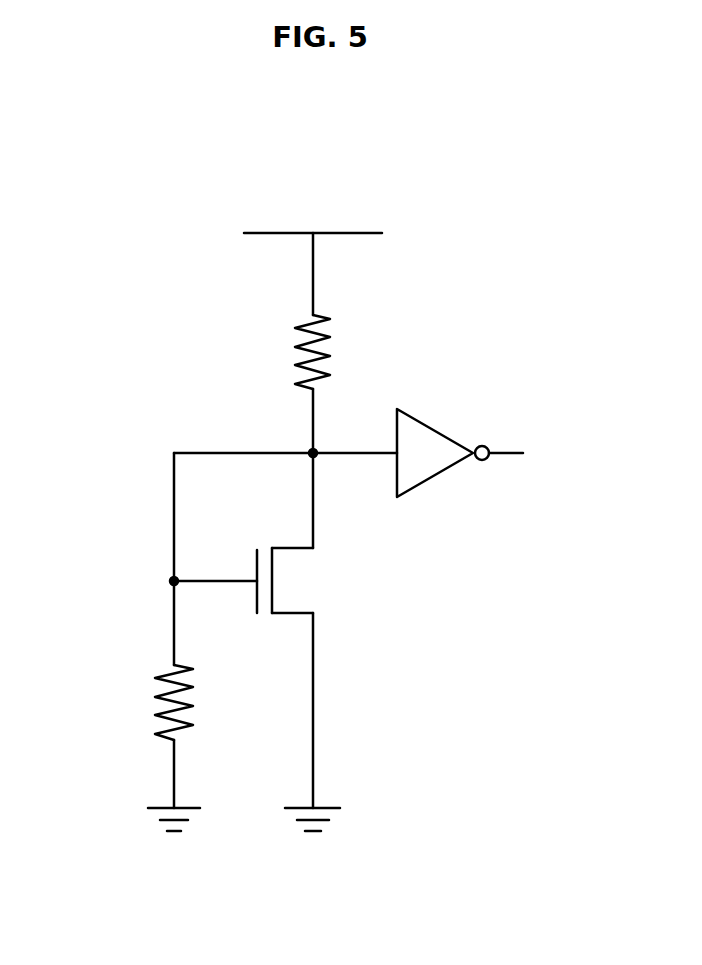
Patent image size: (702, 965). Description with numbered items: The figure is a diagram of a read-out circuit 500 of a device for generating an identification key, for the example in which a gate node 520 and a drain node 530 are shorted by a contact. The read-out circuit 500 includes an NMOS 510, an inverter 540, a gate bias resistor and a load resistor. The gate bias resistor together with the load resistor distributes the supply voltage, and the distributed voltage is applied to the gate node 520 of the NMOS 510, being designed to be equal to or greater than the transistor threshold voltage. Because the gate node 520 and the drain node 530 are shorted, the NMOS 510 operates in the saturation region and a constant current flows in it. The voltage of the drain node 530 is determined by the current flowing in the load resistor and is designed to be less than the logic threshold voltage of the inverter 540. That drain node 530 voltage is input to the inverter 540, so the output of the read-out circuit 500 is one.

The read-out circuit 500 is at (288, 125).
The NMOS 510 is at (272, 592).
The gate node 520 is at (174, 581).
The drain node 530 is at (313, 453).
The inverter 540 is at (435, 425).